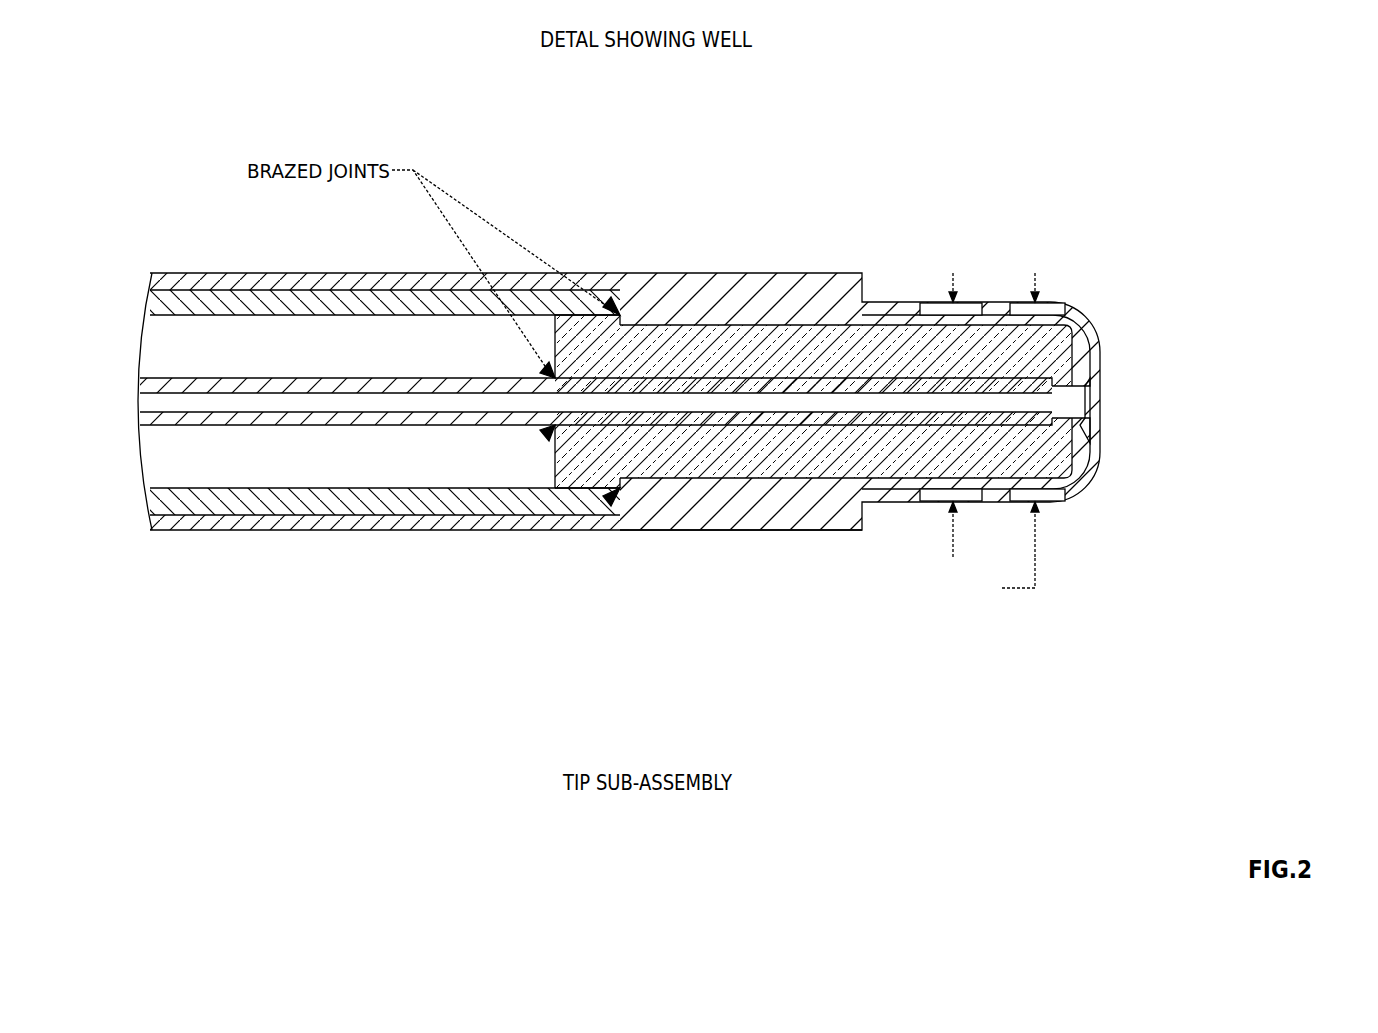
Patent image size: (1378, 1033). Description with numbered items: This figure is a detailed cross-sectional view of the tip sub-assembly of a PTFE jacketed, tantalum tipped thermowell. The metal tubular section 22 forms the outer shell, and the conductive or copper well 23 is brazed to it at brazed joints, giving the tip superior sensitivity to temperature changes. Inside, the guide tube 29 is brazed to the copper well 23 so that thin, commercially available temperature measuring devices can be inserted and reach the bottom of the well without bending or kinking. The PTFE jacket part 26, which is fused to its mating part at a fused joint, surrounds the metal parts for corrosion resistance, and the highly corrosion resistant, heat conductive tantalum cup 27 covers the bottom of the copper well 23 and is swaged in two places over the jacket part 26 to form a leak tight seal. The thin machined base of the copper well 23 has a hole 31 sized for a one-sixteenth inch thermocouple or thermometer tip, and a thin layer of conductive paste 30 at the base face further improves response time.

The tubular section 22 is at (538, 302).
The conductive well 23 is at (587, 470).
The PTFE jacket component 26 is at (663, 515).
The tantalum cup 27 is at (1092, 192).
The guide tube 29 is at (288, 415).
The conductive paste 30 is at (1100, 432).
The hole 31 is at (1074, 396).